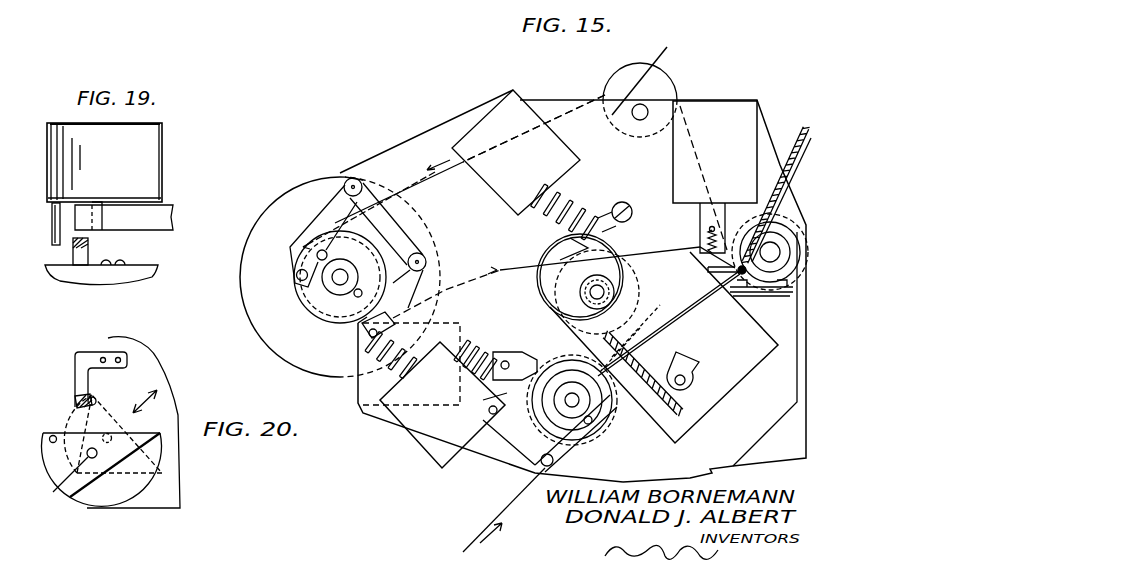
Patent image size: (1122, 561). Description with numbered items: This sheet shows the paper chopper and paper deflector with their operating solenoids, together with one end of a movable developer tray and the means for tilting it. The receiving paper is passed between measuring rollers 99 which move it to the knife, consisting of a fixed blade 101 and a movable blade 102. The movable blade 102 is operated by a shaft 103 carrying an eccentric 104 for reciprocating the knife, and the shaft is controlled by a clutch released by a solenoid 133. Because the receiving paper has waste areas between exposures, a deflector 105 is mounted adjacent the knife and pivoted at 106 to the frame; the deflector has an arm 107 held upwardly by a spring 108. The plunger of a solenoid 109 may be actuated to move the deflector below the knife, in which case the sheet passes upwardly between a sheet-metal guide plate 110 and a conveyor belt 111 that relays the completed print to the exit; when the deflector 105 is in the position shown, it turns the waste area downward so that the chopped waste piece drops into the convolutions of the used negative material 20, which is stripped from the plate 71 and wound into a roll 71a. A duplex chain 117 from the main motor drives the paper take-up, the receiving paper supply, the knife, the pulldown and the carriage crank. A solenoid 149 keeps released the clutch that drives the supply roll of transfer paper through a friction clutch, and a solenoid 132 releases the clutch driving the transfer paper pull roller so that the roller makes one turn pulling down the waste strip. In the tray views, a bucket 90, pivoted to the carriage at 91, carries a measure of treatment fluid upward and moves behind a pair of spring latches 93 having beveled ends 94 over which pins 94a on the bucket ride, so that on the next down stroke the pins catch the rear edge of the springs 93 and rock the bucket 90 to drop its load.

In FIG. 15, the negative material 20 is at (507, 512).
In FIG. 15, the plate 71 is at (500, 240).
In FIG. 15, the supply roll 71a is at (315, 365).
In FIG. 19, the bucket 90 is at (150, 157).
In FIG. 20, the bucket 90 is at (67, 495).
In FIG. 19, the pivot 91 is at (102, 227).
In FIG. 20, the pivot 91 is at (97, 451).
In FIG. 19, the spring latch 93 is at (81, 257).
In FIG. 20, the spring latch 93 is at (75, 357).
In FIG. 19, the beveled end 94 is at (88, 247).
In FIG. 20, the beveled end 94 is at (80, 400).
In FIG. 19, the pin 94a is at (50, 242).
In FIG. 20, the pin 94a is at (53, 435).
In FIG. 15, the measuring roller 99 is at (553, 417).
In FIG. 15, the fixed blade 101 is at (663, 422).
In FIG. 15, the movable blade 102 is at (640, 322).
In FIG. 15, the shaft 103 is at (560, 318).
In FIG. 15, the eccentric 104 is at (547, 290).
In FIG. 15, the deflector 105 is at (687, 333).
In FIG. 15, the pivot 106 is at (740, 297).
In FIG. 15, the arm 107 is at (713, 272).
In FIG. 15, the spring 108 is at (708, 237).
In FIG. 15, the solenoid 109 is at (715, 175).
In FIG. 15, the sheet-metal guide plate 110 is at (803, 137).
In FIG. 15, the conveyor belt 111 is at (803, 222).
In FIG. 15, the chain 117 is at (428, 185).
In FIG. 15, the solenoid 132 is at (370, 387).
In FIG. 15, the solenoid 133 is at (542, 165).
In FIG. 15, the solenoid 149 is at (430, 448).